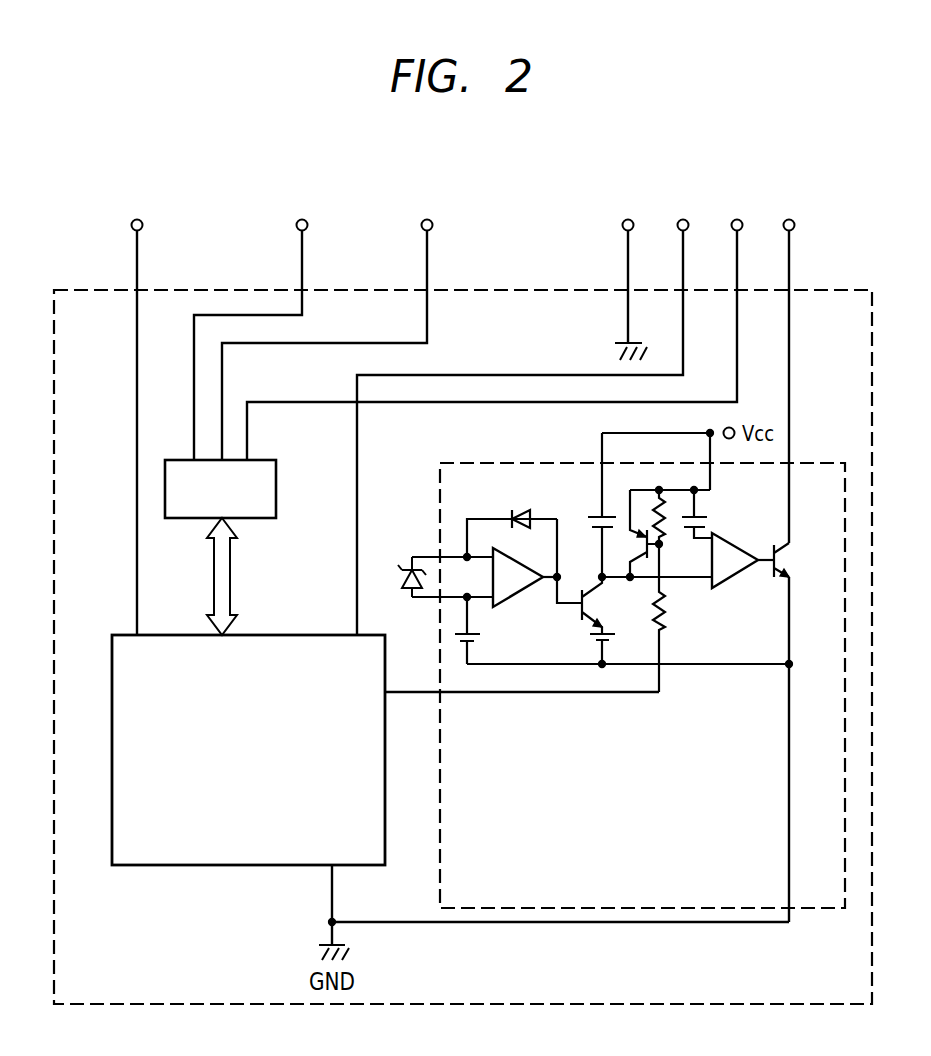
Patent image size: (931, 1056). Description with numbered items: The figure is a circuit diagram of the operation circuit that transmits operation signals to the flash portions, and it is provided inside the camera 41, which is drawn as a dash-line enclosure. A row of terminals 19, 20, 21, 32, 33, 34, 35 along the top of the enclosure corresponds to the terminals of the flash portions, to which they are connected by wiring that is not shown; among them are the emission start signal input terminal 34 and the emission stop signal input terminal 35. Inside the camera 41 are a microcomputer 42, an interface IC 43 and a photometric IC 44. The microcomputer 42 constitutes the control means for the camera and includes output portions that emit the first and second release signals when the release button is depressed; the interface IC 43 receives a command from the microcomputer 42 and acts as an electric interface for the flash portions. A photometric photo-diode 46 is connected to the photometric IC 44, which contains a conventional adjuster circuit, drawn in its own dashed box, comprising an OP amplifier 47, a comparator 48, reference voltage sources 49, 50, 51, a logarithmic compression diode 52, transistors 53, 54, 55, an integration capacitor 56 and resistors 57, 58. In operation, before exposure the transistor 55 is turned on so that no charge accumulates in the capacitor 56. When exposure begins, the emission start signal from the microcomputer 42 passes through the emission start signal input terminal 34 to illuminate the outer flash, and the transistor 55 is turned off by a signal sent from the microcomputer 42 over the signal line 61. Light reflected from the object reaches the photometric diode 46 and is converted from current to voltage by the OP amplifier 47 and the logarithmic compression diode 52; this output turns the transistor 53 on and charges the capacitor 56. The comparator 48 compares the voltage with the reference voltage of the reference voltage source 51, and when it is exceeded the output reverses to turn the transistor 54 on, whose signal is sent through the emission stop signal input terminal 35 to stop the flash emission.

The terminal 19 is at (137, 220).
The terminal 20 is at (302, 220).
The terminal 21 is at (427, 220).
The ground terminal 32 is at (628, 220).
The terminal 33 is at (683, 220).
The emission start signal input terminal 34 is at (737, 220).
The emission stop signal input terminal 35 is at (789, 220).
The camera 41 is at (832, 289).
The microcomputer 42 is at (210, 867).
The interface IC 43 is at (276, 492).
The photometric IC 44 is at (814, 909).
The photometric photo-diode 46 is at (403, 580).
The OP amplifier 47 is at (518, 598).
The comparator 48 is at (738, 573).
The reference voltage source 49 is at (480, 639).
The reference voltage source 50 is at (613, 640).
The reference voltage source 51 is at (707, 519).
The logarithmic compression diode 52 is at (527, 510).
The transistor 53 is at (597, 604).
The transistor 54 is at (783, 560).
The transistor 55 is at (641, 546).
The integration capacitor 56 is at (588, 523).
The resistor 57 is at (667, 518).
The resistor 58 is at (667, 615).
The signal line 61 is at (428, 694).